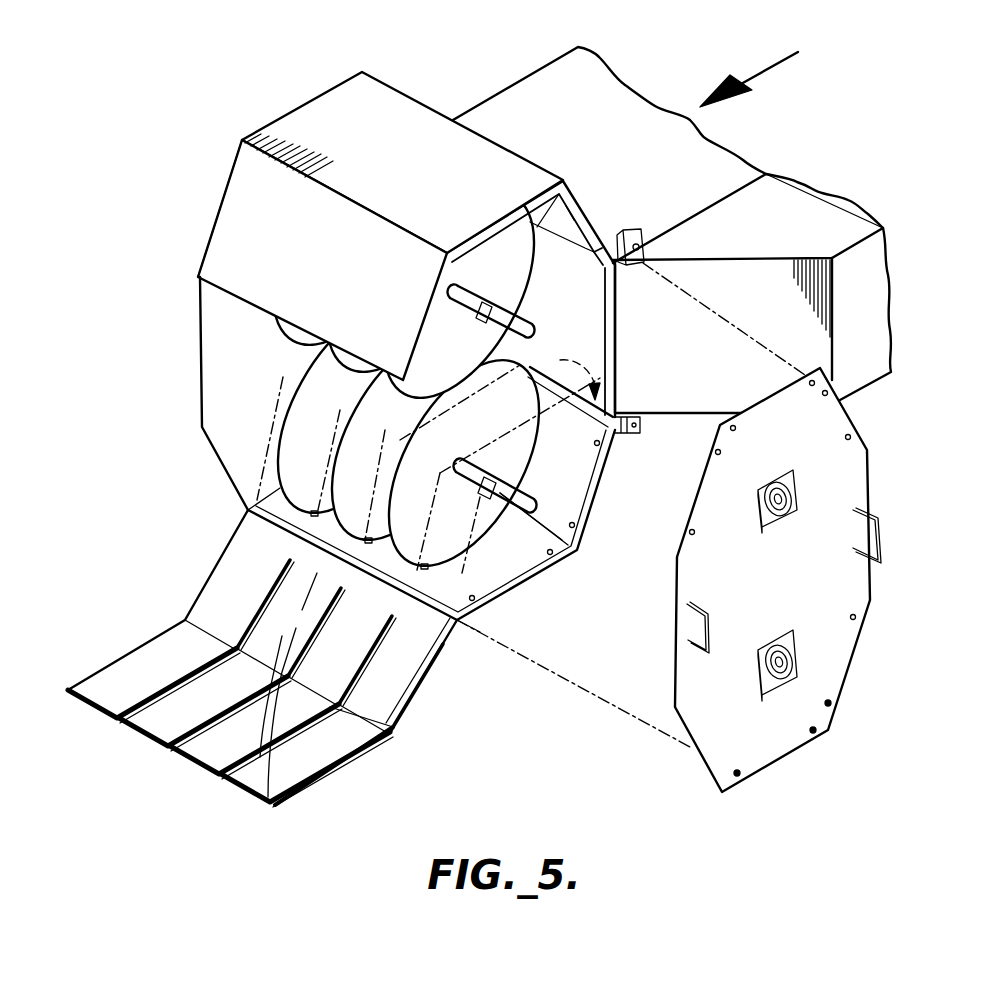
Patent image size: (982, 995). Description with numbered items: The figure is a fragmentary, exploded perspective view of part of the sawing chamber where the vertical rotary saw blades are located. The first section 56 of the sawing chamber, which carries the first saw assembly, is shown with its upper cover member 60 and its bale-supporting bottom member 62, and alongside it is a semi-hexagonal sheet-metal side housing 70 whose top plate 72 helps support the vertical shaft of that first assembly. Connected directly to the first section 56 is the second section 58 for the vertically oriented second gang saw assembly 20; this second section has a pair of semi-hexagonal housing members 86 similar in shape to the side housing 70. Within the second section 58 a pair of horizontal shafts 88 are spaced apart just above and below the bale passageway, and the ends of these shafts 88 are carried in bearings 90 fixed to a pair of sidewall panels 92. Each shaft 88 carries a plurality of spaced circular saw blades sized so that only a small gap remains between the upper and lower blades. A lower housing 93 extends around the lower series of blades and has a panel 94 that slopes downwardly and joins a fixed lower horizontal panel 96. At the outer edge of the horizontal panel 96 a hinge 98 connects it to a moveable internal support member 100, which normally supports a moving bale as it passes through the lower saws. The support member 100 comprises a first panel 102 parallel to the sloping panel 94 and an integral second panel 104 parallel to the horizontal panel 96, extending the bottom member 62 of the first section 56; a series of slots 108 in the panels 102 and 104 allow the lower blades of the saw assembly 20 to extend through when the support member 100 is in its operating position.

The second gang saw assembly 20 is at (477, 272).
The first section 56 is at (886, 290).
The second section 58 is at (254, 202).
The upper cover member 60 is at (601, 150).
The bottom member 62 is at (543, 274).
The side housing 70 is at (812, 214).
The top plate 72 is at (750, 230).
The semi-hexagonal housing member 86 is at (365, 152).
The horizontal shaft 88 is at (517, 317).
The bearing 90 is at (783, 500).
The sidewall panel 92 is at (765, 584).
The lower housing 93 is at (470, 618).
The panel 94 is at (560, 493).
The lower horizontal panel 96 is at (507, 555).
The hinge 98 is at (427, 668).
The internal support member 100 is at (358, 752).
The first panel 102 is at (255, 658).
The second panel 104 is at (148, 663).
The slots 108 is at (222, 775).